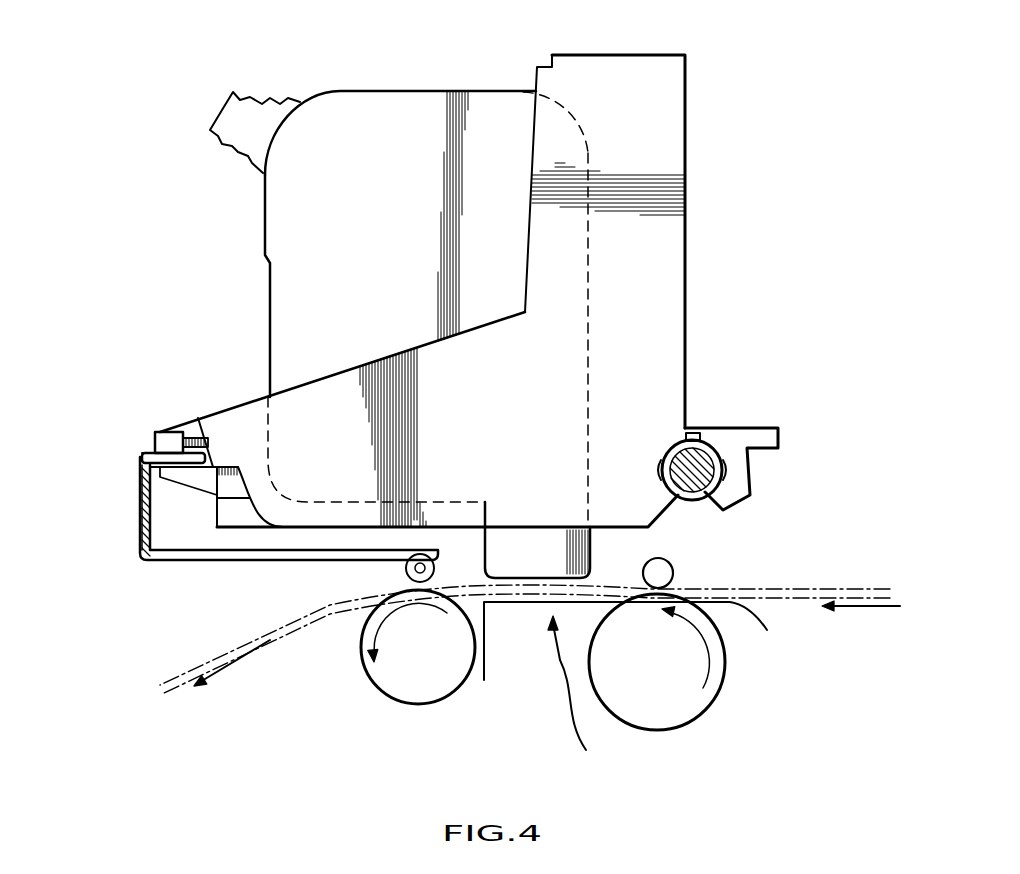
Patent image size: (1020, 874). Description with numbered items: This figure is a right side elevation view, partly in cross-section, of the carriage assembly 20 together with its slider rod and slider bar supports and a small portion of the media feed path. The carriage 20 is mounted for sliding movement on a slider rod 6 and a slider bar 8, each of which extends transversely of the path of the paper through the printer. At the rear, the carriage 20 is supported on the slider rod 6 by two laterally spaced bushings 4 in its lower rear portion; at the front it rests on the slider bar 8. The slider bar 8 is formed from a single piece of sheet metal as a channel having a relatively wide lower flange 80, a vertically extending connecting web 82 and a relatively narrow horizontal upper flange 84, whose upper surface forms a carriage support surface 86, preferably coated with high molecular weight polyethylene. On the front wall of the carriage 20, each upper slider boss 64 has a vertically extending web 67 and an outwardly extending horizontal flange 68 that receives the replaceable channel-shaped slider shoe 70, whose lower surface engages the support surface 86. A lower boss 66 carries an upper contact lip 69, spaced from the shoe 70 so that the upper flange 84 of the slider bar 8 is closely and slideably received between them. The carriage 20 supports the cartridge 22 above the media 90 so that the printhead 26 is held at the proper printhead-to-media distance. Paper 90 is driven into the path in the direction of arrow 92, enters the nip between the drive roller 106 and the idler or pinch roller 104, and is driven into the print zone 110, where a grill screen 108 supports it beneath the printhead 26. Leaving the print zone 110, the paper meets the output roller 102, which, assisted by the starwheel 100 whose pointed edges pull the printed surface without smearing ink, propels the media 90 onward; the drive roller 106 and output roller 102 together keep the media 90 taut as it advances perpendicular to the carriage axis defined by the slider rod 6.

The bushing 4 is at (712, 448).
The slider rod 6 is at (690, 500).
The slider bar 8 is at (243, 563).
The carriage assembly 20 is at (722, 182).
The cartridge 22 is at (383, 110).
The printhead 26 is at (530, 575).
The upper slider boss 64 is at (165, 428).
The lower boss 66 is at (227, 483).
The vertically extending web 67 is at (197, 426).
The horizontal flange 68 is at (210, 442).
The upper contact lip 69 is at (142, 461).
The slider shoe 70 is at (153, 430).
The lower flange 80 is at (170, 562).
The connecting web 82 is at (142, 515).
The upper flange 84 is at (178, 468).
The carriage support surface 86 is at (142, 453).
The media 90 is at (868, 588).
The arrow 92 is at (565, 640).
The starwheel 100 is at (405, 568).
The output roller 102 is at (360, 685).
The pinch roller 104 is at (673, 568).
The drive roller 106 is at (727, 663).
The grill screen 108 is at (484, 640).
The print zone 110 is at (589, 697).